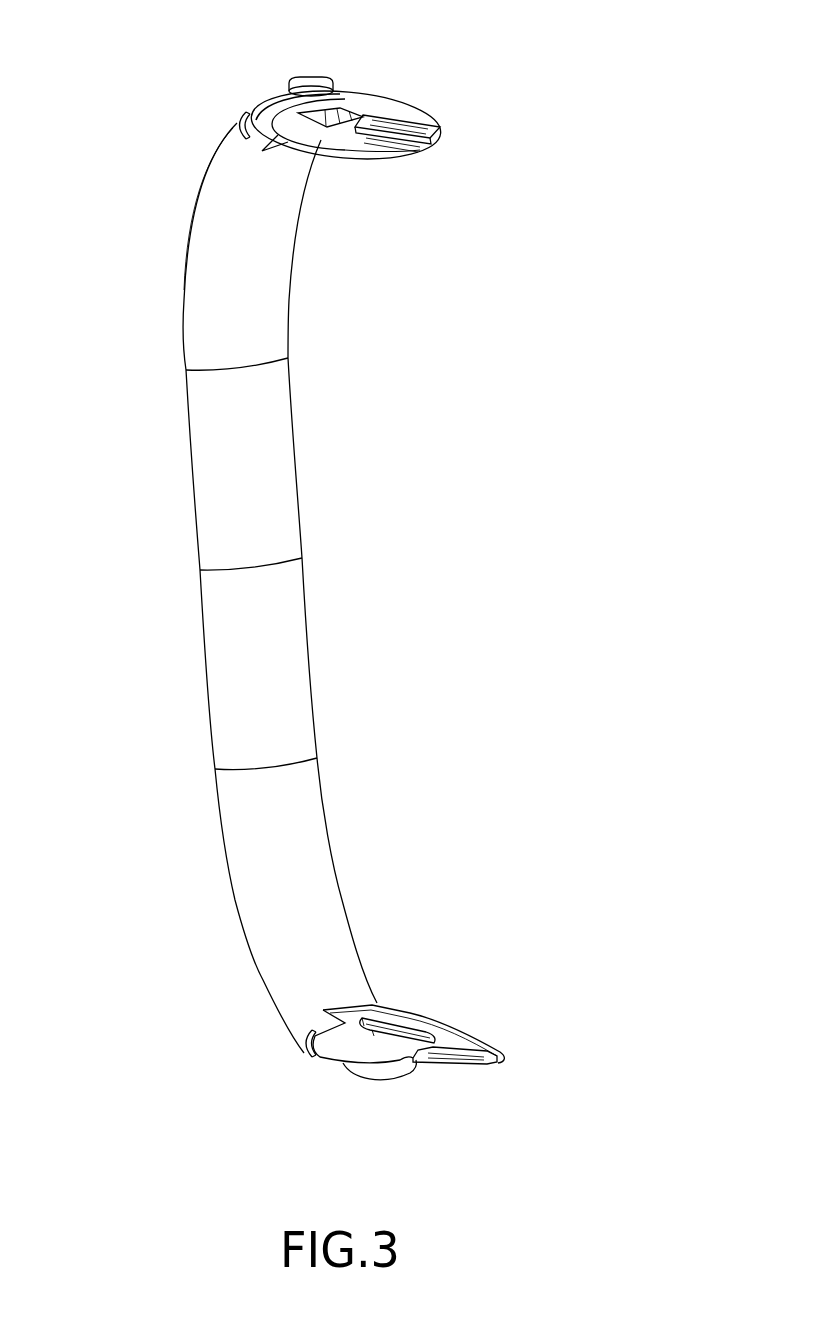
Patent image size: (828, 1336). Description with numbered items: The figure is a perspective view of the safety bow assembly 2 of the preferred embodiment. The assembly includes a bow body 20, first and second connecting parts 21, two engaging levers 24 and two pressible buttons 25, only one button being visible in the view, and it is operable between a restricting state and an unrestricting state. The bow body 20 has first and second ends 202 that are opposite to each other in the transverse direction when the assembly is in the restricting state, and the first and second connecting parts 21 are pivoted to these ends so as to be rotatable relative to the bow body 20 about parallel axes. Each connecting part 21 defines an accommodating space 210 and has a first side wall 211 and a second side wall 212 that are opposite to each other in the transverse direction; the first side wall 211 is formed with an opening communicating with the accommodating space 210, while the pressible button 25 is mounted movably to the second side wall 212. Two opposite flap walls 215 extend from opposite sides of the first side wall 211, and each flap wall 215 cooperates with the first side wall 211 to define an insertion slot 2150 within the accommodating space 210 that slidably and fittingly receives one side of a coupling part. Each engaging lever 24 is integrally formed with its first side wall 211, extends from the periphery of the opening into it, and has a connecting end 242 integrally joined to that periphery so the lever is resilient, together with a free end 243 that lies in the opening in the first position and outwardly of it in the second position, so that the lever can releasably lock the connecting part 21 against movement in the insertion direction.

The safety bow assembly 2 is at (165, 460).
The bow body 20 is at (208, 655).
The first and second ends 202 is at (298, 1023).
The first and second connecting parts 21 is at (366, 590).
The accommodating space 210 is at (351, 115).
The first side wall 211 is at (323, 153).
The second side wall 212 is at (275, 98).
The flap walls 215 is at (252, 122).
The insertion slot 2150 is at (424, 137).
The engaging lever 24 is at (440, 966).
The connecting end 242 is at (437, 1037).
The free end 243 is at (378, 1027).
The pressible button 25 is at (310, 77).